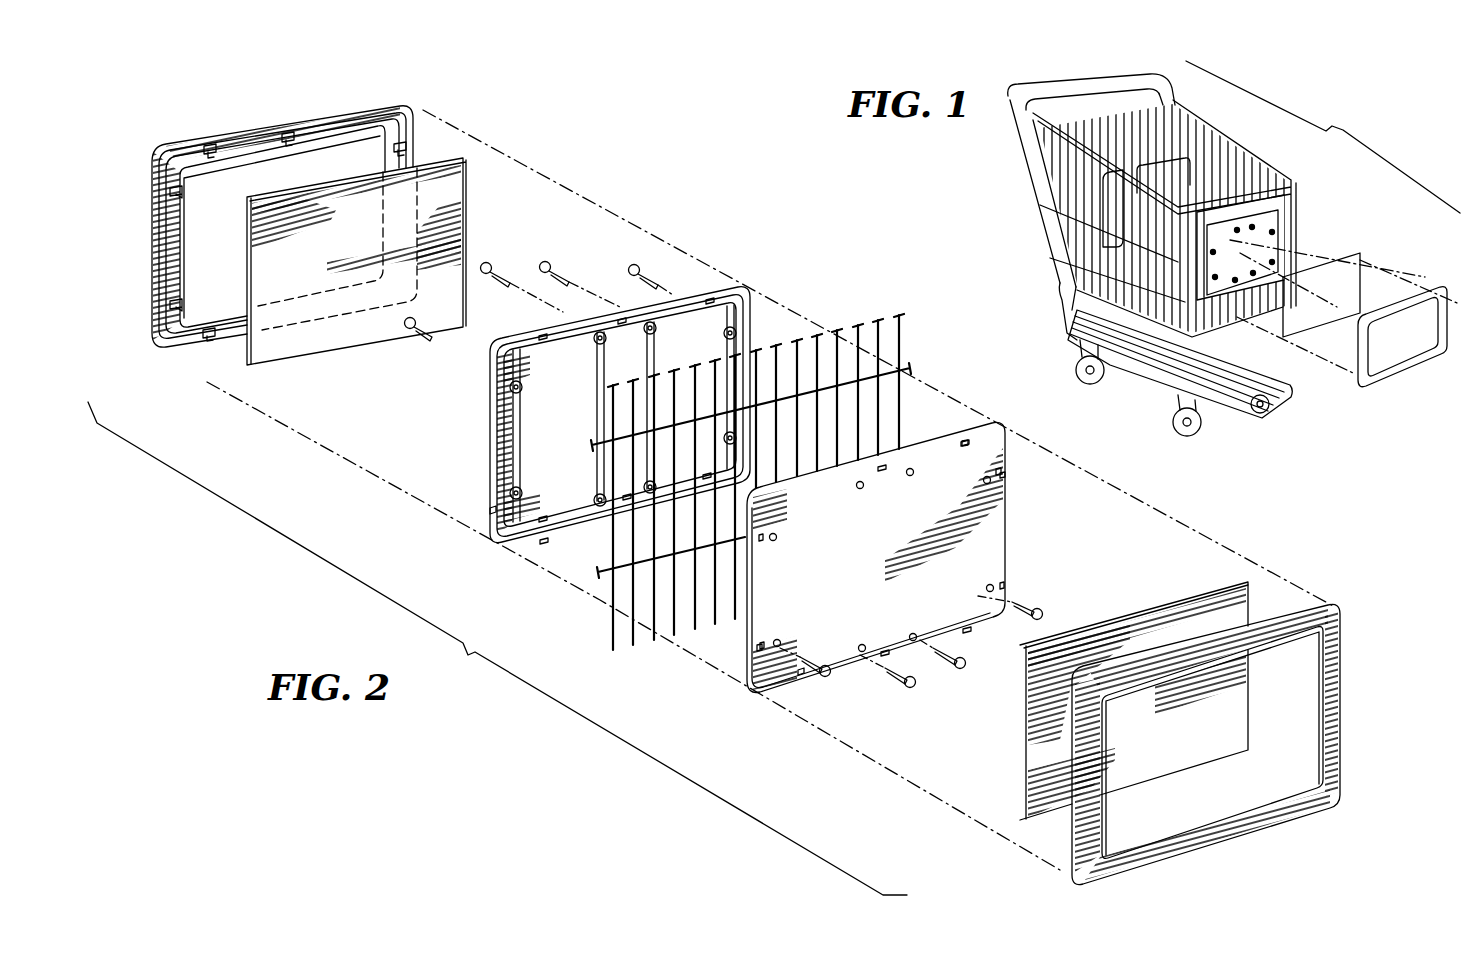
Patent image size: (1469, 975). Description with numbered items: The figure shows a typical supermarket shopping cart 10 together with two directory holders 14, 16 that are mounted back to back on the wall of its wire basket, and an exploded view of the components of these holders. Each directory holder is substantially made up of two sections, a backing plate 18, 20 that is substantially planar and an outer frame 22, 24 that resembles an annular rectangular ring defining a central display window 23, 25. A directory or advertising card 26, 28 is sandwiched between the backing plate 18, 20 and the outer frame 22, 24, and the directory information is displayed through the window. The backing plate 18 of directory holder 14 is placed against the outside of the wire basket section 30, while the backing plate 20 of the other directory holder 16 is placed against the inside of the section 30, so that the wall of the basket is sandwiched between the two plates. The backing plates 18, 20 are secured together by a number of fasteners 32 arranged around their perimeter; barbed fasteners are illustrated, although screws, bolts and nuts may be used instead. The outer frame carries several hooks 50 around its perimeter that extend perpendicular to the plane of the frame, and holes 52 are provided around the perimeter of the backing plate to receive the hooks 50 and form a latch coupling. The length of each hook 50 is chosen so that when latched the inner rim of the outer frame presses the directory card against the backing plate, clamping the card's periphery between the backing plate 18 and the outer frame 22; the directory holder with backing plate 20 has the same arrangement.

In FIG. 1, the shopping cart 10 is at (1034, 204).
In FIG. 2, the directory holder 14 is at (1196, 525).
In FIG. 1, the directory holder 14 is at (1366, 240).
In FIG. 2, the directory holder 16 is at (630, 178).
In FIG. 1, the directory holder 16 is at (1230, 172).
In FIG. 2, the backing plate 18 is at (985, 512).
In FIG. 2, the backing plate 20 is at (736, 288).
In FIG. 2, the outer frame 22 is at (1343, 622).
In FIG. 2, the central display window 23 is at (1292, 746).
In FIG. 2, the outer frame 24 is at (338, 110).
In FIG. 2, the central display window 25 is at (193, 232).
In FIG. 2, the directory card 26 is at (1210, 592).
In FIG. 2, the directory card 28 is at (465, 213).
In FIG. 2, the wire basket section 30 is at (884, 409).
In FIG. 2, the fasteners 32 is at (635, 268).
In FIG. 2, the hooks 50 is at (207, 148).
In FIG. 2, the holes 52 is at (543, 527).